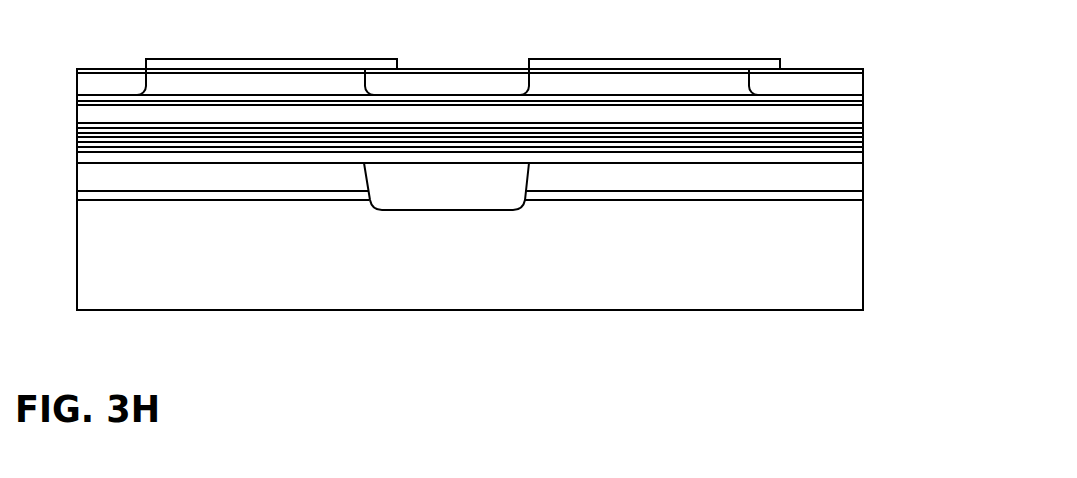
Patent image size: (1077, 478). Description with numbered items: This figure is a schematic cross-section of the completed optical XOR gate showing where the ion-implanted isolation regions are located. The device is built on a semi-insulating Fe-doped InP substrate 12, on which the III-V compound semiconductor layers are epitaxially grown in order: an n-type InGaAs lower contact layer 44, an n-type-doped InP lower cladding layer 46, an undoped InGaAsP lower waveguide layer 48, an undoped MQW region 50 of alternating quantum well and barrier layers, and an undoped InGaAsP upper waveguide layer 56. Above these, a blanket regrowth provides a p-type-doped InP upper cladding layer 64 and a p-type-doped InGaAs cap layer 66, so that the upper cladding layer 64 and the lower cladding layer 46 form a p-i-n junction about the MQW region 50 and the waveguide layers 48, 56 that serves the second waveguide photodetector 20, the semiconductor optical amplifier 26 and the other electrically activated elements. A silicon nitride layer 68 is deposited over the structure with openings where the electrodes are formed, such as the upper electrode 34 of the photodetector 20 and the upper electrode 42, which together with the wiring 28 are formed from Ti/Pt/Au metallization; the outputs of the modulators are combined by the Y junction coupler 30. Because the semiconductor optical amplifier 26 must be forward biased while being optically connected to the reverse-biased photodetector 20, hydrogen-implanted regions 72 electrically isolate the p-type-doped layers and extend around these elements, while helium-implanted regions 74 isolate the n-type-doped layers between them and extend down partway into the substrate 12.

The substrate 12 is at (470, 189).
The second waveguide photodetector 20 is at (572, 57).
The semiconductor optical amplifier 26 is at (163, 57).
The wiring 28 is at (765, 58).
The branching-waveguide Y junction coupler 30 is at (381, 58).
The upper electrode 34 is at (635, 58).
The upper electrode 42 is at (271, 58).
The lower contact layer 44 is at (77, 197).
The lower cladding layer 46 is at (863, 179).
The lower waveguide layer 48 is at (77, 157).
The MQW region 50 is at (863, 123).
The upper waveguide layer 56 is at (77, 115).
The upper cladding layer 64 is at (683, 85).
The cap layer 66 is at (197, 68).
The silicon nitride layer 68 is at (94, 68).
The hydrogen-implanted region 72 is at (430, 87).
The helium-implanted region 74 is at (446, 186).